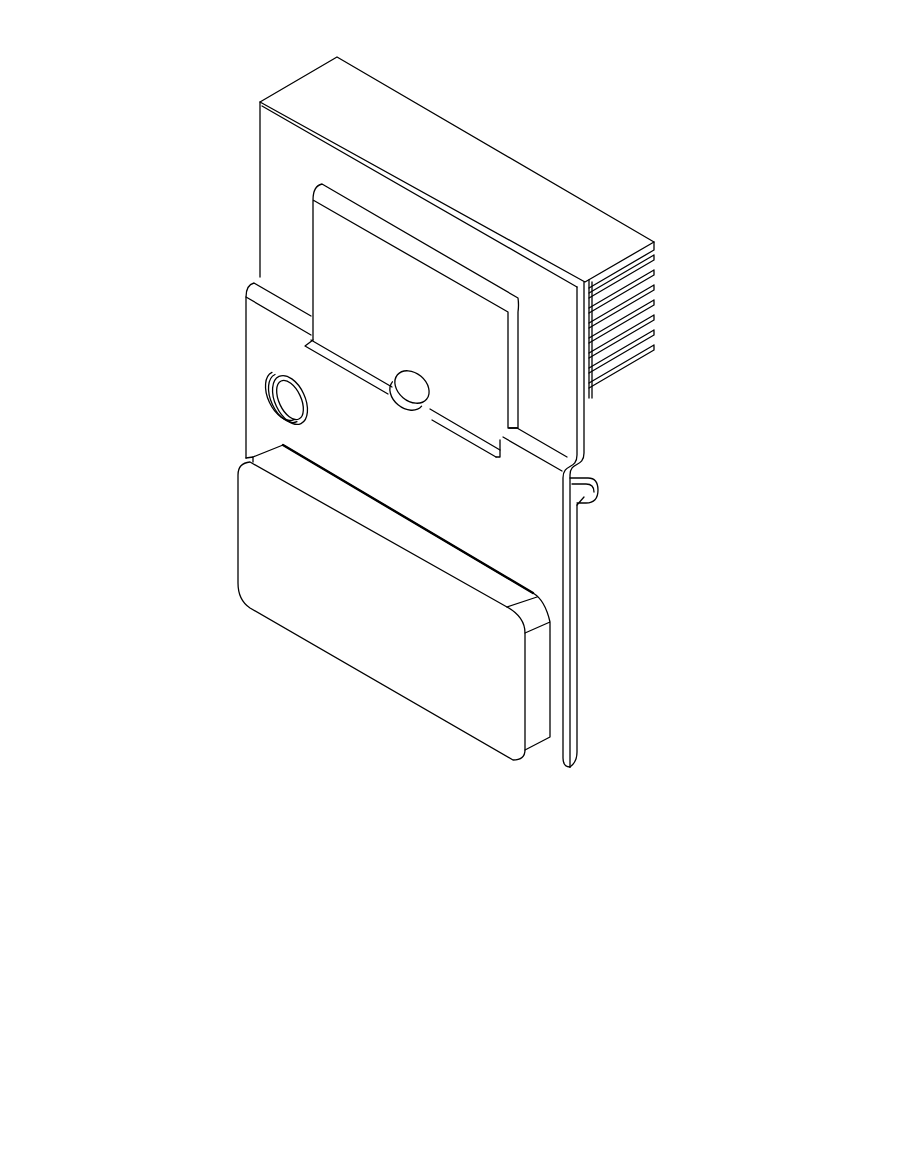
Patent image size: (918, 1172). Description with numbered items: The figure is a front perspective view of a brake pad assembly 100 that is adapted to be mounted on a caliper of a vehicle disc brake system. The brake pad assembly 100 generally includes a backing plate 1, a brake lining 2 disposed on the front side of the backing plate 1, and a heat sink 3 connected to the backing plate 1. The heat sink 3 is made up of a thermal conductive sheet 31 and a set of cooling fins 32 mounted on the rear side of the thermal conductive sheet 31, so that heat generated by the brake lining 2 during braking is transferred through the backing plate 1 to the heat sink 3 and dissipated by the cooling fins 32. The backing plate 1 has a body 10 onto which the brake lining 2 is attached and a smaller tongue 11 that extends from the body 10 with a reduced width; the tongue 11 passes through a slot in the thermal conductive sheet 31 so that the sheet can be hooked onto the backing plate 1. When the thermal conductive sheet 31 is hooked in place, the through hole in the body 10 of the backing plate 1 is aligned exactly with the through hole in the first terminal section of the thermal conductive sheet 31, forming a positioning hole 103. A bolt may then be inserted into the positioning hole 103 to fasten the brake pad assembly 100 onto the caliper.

The brake pad assembly 100 is at (600, 132).
The heat sink 3 is at (140, 19).
The cooling fins 32 is at (302, 95).
The thermal conductive sheet 31 is at (275, 194).
The backing plate 1 is at (705, 475).
The tongue 11 is at (513, 397).
The body 10 is at (573, 655).
The positioning hole 103 is at (290, 398).
The brake lining 2 is at (340, 637).